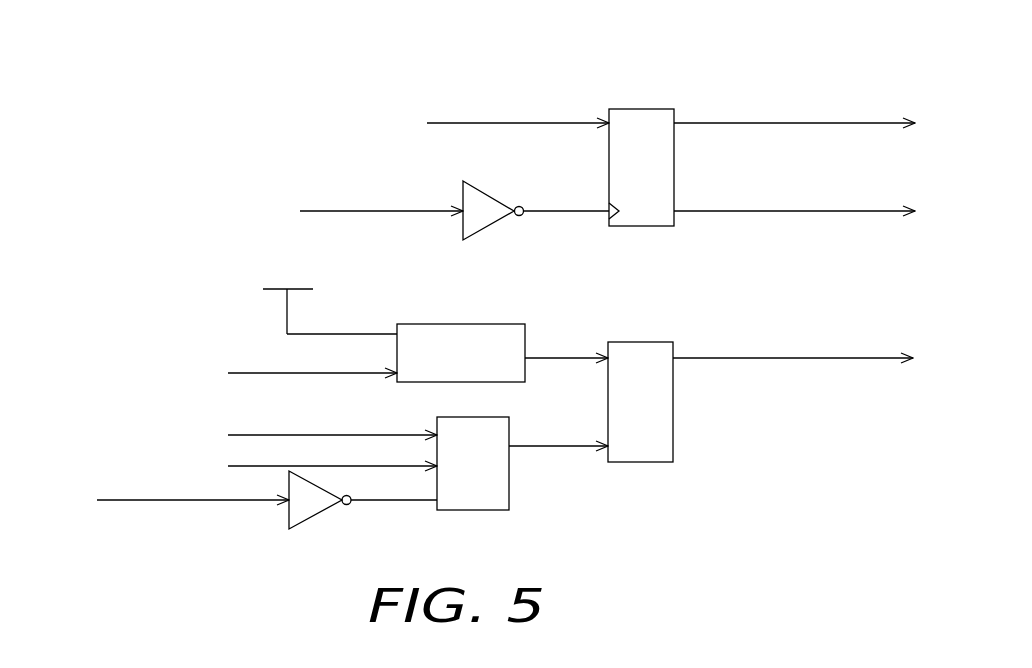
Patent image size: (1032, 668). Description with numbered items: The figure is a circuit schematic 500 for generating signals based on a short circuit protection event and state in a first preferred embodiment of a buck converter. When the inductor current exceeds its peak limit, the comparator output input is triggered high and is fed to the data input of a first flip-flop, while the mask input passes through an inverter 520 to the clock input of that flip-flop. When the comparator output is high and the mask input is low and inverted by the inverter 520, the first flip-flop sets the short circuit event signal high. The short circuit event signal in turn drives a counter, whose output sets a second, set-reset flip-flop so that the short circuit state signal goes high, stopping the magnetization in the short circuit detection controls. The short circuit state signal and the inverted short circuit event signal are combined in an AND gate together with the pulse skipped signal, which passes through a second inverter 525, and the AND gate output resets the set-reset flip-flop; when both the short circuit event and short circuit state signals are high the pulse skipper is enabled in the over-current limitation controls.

The short-circuit detection circuit 500 is at (551, 48).
The inverter 520 is at (496, 194).
The inverter 525 is at (320, 513).